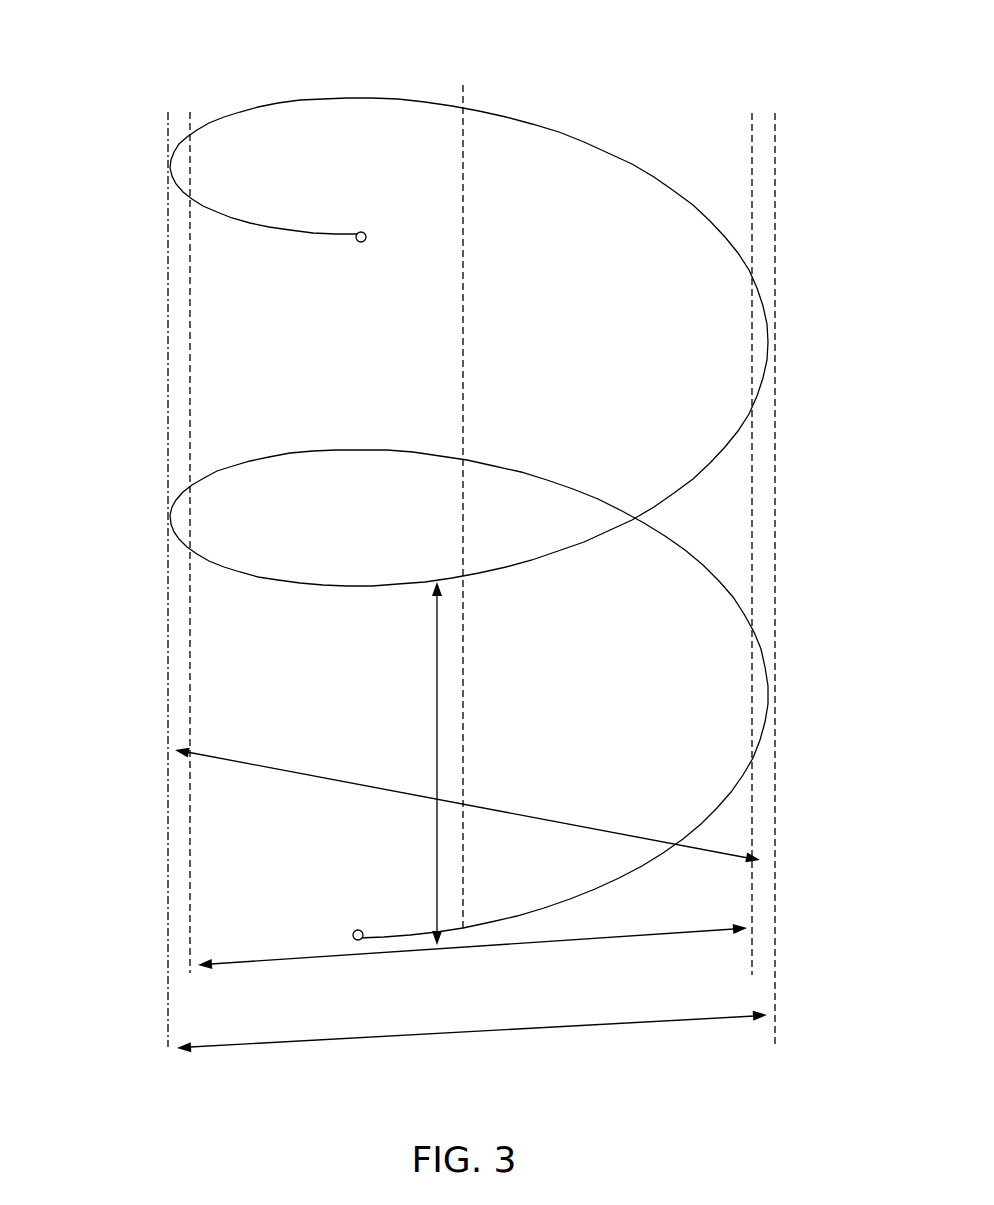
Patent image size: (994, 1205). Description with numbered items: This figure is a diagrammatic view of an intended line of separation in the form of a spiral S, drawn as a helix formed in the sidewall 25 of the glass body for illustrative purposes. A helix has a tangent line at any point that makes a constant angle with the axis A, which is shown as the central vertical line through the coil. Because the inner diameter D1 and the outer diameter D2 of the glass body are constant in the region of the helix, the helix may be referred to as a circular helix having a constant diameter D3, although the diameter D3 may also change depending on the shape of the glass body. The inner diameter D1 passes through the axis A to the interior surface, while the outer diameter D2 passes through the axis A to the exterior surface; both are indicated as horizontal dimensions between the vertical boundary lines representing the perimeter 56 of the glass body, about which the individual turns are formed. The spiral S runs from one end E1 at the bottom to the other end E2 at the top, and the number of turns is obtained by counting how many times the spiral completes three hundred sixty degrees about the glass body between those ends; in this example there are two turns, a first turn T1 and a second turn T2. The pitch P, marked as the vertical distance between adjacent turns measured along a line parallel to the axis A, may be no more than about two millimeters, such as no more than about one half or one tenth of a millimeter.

The spiral S is at (441, 501).
The first turn T1 is at (768, 292).
The second turn T2 is at (768, 648).
The axis A is at (463, 103).
The sidewall 25 is at (786, 483).
The perimeter 56 is at (762, 942).
The end E1 is at (355, 929).
The end E2 is at (360, 243).
The pitch P is at (419, 763).
The inner diameter D1 is at (472, 959).
The outer diameter D2 is at (472, 1048).
The diameter of the helix D3 is at (467, 805).